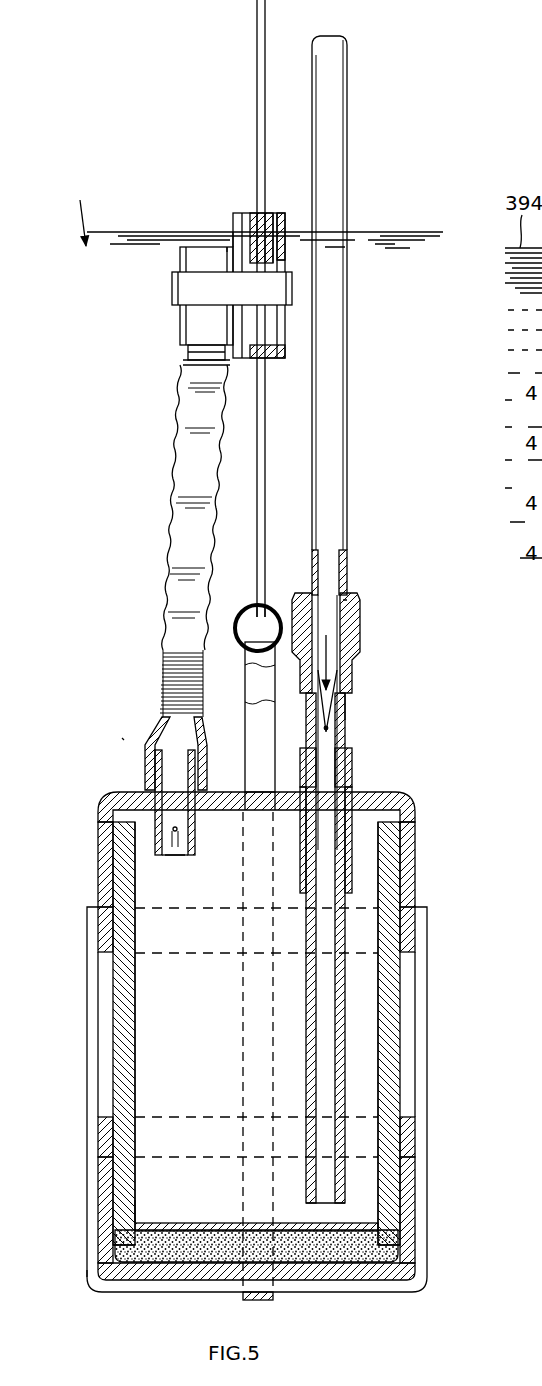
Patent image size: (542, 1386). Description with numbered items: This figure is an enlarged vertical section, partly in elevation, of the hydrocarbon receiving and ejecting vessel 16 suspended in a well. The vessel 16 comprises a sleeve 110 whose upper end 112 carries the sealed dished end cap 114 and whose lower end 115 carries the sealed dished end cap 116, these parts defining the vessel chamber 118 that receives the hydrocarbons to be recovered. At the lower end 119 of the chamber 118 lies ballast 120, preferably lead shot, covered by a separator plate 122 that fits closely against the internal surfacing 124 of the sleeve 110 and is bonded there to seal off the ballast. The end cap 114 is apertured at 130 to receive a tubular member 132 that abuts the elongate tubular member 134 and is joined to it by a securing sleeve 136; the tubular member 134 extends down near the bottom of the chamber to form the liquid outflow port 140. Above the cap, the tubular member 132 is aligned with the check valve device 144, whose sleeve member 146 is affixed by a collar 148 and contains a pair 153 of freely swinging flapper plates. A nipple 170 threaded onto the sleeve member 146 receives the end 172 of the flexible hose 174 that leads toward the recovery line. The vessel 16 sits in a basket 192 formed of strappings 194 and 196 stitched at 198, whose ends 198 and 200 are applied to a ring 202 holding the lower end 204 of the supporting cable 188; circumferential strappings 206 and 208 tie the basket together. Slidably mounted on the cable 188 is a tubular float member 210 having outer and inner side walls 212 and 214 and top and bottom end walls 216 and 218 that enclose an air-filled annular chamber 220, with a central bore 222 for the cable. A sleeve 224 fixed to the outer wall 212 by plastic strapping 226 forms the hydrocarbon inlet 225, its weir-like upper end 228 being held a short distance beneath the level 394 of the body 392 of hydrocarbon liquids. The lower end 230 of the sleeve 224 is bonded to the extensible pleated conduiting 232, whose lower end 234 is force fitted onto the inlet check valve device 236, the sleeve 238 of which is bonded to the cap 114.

The hydrocarbons receiving and ejecting vessel 16 is at (122, 738).
The sleeve 110 is at (428, 1032).
The upper end of sleeve 112 is at (390, 847).
The dished end cap 114 is at (383, 797).
The lower end of sleeve 115 is at (397, 1222).
The dished end cap 116 is at (405, 1273).
The vessel chamber 118 is at (160, 1002).
The lower end of chamber 119 is at (152, 1190).
The ballast 120 is at (198, 1249).
The separator plate 122 is at (358, 1223).
The internal surfacing of sleeve 124 is at (382, 1090).
The aperture 130 is at (282, 822).
The tubular member 132 is at (412, 815).
The elongate tubular member 134 is at (350, 925).
The securing sleeve 136 is at (300, 890).
The vessel chamber liquid outflow port 140 is at (312, 1212).
The check valve device 144 is at (368, 668).
The sleeve member 146 is at (358, 706).
The collar 148 is at (300, 760).
The pair of flapper valve plates 153 is at (348, 605).
The nipple 170 is at (357, 595).
The end of flexible hose 172 is at (362, 630).
The flexible hose 174 is at (343, 217).
The supporting cable 188 is at (257, 50).
The basket structure 192 is at (95, 1289).
The strapping 194 is at (428, 975).
The strapping 196 is at (243, 760).
The stitching 198 is at (245, 672).
The end of strapping 200 is at (276, 612).
The ring 202 is at (242, 610).
The lower end of cable 204 is at (292, 590).
The upper transverse circumferential strapping 206 is at (418, 930).
The lower transverse circumferential strapping 208 is at (415, 1137).
The tubular float member 210 is at (227, 207).
The outer cylindrical side wall 212 is at (285, 240).
The inner cylindrical side wall 214 is at (275, 213).
The top end wall 216 is at (285, 230).
The bottom end wall 218 is at (280, 360).
The annular closed off chamber 220 is at (282, 258).
The bore 222 is at (262, 210).
The sleeve 224 is at (180, 255).
The hydrocarbon inlet 225 is at (203, 232).
The plastic strapping 226 is at (172, 293).
The upper end of sleeve 228 is at (218, 244).
The lower end of sleeve 230 is at (168, 348).
The longitudinally extensible and contractible conduiting 232 is at (170, 515).
The lower end of conduiting 234 is at (148, 742).
The check valve device 236 is at (147, 840).
The sleeve of check valve device 238 is at (197, 840).
The body of hydrocarbon liquids 392 is at (79, 211).
The level of hydrocarbon liquids 394 is at (375, 231).